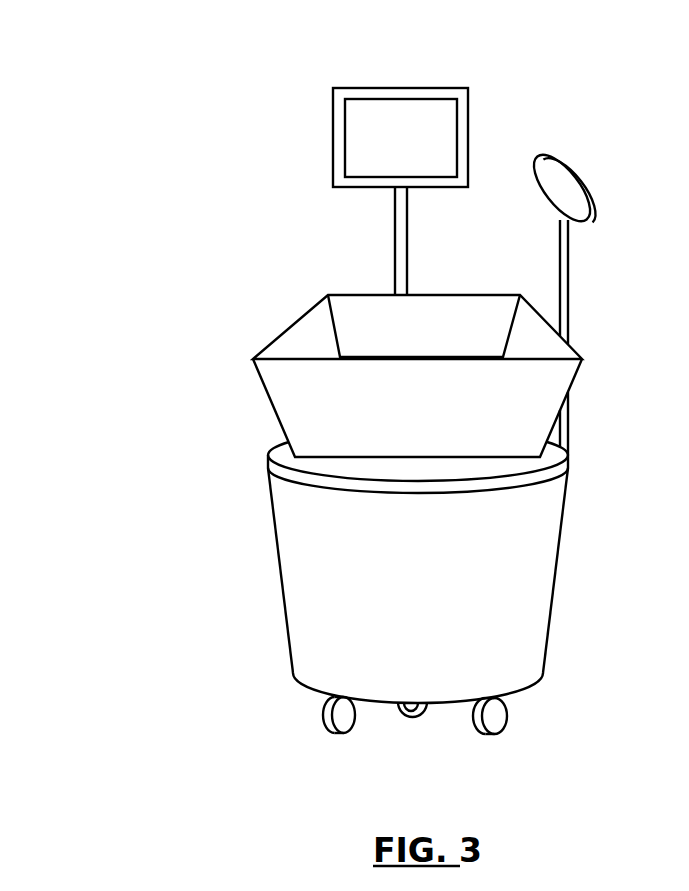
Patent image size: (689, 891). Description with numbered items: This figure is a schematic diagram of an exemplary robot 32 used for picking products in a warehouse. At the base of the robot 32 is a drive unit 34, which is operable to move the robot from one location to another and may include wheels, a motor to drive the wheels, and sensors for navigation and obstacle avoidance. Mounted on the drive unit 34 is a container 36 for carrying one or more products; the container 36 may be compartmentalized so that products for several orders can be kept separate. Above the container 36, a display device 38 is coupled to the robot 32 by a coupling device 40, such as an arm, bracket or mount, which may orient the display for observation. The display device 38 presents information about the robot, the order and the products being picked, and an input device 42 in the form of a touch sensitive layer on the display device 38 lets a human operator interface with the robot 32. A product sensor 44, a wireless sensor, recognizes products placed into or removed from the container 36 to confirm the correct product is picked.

The robot 32 is at (128, 49).
The drive unit 34 is at (240, 613).
The container 36 is at (290, 327).
The display device 38 is at (335, 133).
The coupling device 40 is at (395, 265).
The input device 42 is at (415, 146).
The product sensor 44 is at (546, 153).